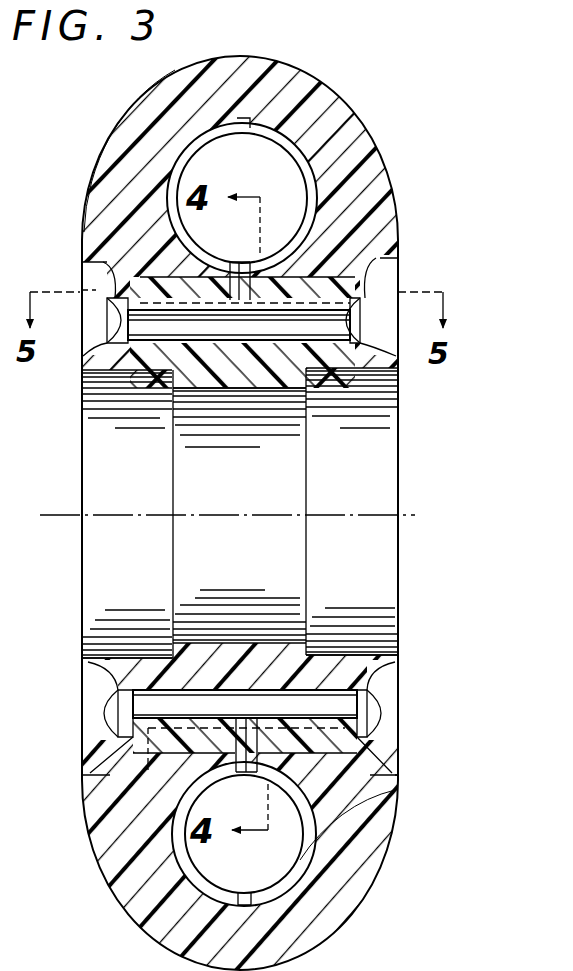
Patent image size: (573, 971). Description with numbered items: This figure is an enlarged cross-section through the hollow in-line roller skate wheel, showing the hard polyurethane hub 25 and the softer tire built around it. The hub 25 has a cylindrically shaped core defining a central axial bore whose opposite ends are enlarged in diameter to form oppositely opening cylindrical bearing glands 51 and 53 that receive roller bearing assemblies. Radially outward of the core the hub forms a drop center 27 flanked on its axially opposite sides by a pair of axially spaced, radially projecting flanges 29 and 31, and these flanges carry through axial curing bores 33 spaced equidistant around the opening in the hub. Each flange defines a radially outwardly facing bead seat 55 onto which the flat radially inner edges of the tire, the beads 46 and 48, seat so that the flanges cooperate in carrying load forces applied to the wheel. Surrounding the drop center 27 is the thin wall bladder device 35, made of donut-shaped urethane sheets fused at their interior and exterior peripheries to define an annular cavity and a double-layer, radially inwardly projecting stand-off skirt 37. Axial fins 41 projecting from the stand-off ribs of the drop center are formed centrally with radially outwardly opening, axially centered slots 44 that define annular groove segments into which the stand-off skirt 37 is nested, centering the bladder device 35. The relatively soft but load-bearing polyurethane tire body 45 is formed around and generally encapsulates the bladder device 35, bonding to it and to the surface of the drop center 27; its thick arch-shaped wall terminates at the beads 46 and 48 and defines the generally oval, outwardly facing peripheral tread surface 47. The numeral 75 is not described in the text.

The hub 25 is at (402, 446).
The drop center 27 is at (257, 250).
The radial flange 29 is at (392, 266).
The radial flange 31 is at (84, 264).
The axial curing bore 33 is at (362, 335).
The bladder device 35 is at (320, 862).
The stand-off skirt 37 is at (268, 746).
The axial fin 41 is at (158, 760).
The centering slot 44 is at (232, 745).
The tire body 45 is at (301, 82).
The bead 46 is at (399, 270).
The peripheral tread surface 47 is at (197, 54).
The bead 48 is at (96, 290).
The cylindrical bearing gland 51 is at (386, 656).
The cylindrical bearing gland 53 is at (100, 660).
The bead seat 55 is at (92, 776).
The upper bushing ring 75 is at (384, 234).